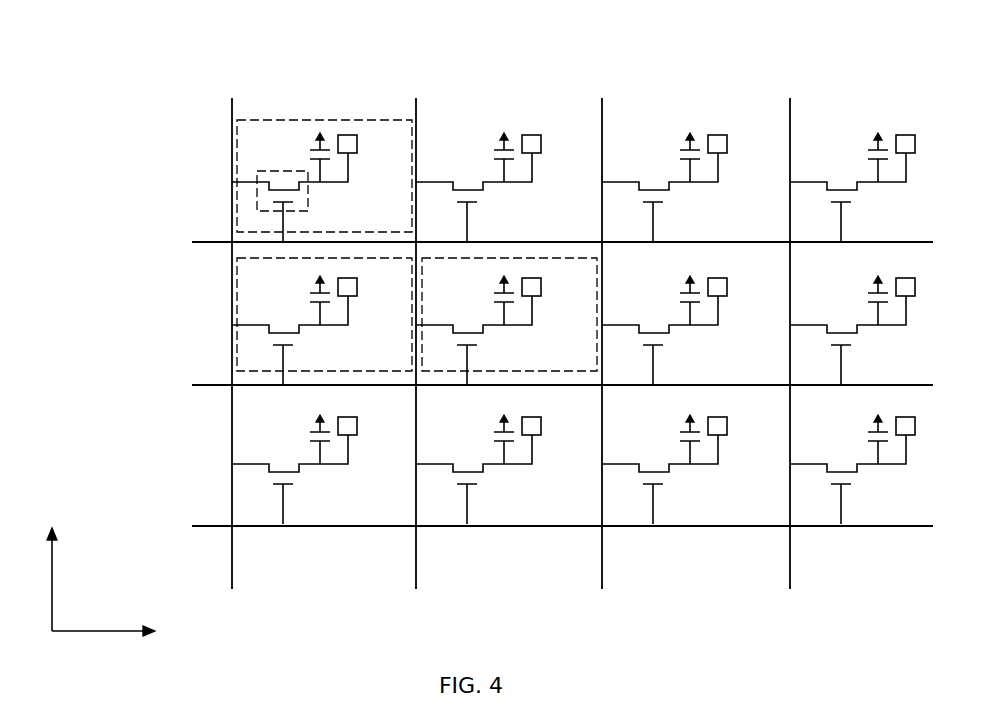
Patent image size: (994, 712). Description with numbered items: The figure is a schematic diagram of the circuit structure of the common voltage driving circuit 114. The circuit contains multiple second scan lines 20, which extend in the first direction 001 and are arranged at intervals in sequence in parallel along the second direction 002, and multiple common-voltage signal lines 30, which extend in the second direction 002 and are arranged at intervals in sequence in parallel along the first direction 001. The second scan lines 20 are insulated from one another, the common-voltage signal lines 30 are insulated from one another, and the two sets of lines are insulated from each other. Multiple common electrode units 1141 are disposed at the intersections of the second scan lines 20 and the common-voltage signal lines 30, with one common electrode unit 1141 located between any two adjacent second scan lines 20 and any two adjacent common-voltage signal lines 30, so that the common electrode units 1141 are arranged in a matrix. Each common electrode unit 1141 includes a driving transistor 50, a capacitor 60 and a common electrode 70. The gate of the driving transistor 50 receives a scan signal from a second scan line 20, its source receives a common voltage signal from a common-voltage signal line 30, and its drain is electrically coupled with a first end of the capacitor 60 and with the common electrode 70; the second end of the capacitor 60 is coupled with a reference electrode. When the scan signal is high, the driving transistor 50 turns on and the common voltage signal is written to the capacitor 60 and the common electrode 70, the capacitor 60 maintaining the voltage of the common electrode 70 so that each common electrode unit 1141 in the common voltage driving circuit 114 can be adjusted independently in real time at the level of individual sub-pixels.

The common voltage driving circuit 114 is at (463, 28).
The common-voltage signal line 30 is at (510, 330).
The second scan line 20 is at (549, 384).
The common electrode unit 1141 is at (242, 273).
The driving transistor 50 is at (312, 206).
The capacitor 60 is at (285, 141).
The common electrode 70 is at (317, 121).
The first direction 001 is at (103, 644).
The second direction 002 is at (35, 579).